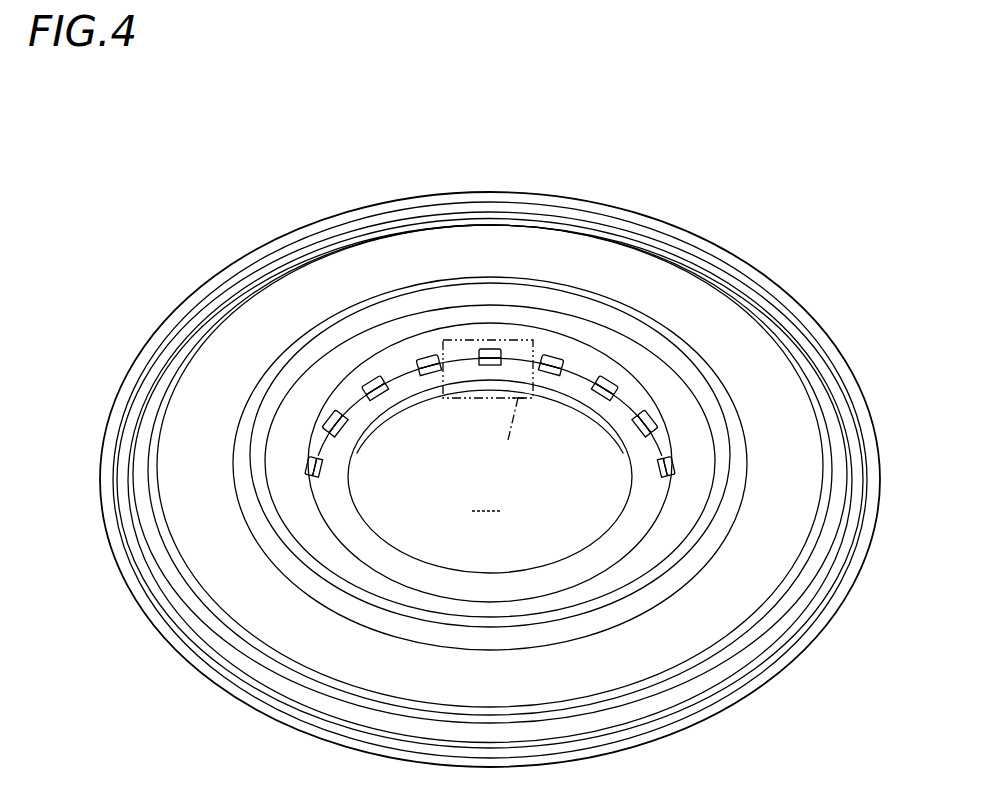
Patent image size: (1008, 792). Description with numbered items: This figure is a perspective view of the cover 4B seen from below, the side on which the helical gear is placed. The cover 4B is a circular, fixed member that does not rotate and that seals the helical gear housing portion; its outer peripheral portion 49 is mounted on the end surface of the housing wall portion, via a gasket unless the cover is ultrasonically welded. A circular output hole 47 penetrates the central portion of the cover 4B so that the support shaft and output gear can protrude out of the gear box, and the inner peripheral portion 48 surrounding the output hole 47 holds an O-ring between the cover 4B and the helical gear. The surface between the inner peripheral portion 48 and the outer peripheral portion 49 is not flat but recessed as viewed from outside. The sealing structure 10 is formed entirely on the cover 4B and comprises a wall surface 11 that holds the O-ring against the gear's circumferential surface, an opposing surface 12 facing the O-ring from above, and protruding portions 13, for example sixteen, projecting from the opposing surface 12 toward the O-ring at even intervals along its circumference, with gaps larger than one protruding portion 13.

The cover 4B is at (518, 155).
The sealing structure 10 is at (377, 347).
The wall surface 11 is at (417, 345).
The opposing surface 12 is at (397, 389).
The protruding portions 13 is at (557, 354).
The output hole 47 is at (486, 498).
The inner peripheral portion 48 is at (368, 437).
The outer peripheral portion 49 is at (803, 633).